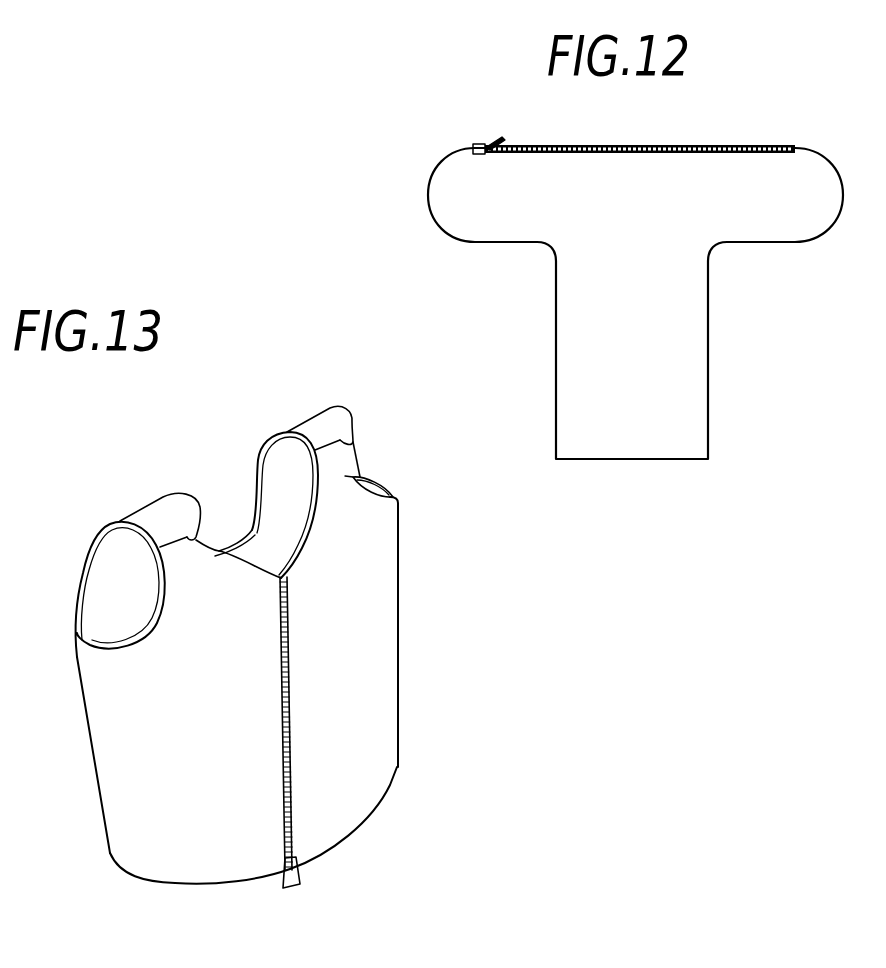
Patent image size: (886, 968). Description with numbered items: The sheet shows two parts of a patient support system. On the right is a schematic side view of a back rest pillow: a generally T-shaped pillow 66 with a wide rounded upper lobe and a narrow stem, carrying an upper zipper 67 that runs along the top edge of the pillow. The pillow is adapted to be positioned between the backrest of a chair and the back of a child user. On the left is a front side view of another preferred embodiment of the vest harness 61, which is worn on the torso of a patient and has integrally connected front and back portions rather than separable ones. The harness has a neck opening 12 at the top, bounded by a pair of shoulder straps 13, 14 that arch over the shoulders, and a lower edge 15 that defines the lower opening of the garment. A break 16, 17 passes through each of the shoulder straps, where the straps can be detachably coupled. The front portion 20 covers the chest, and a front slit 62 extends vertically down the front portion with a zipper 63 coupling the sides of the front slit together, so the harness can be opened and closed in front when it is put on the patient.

In FIG. 13, the neck opening 12 is at (265, 487).
In FIG. 13, the shoulder strap 13 is at (100, 530).
In FIG. 13, the shoulder strap 14 is at (353, 477).
In FIG. 13, the lower edge 15 is at (323, 857).
In FIG. 13, the break 16 is at (195, 527).
In FIG. 13, the break 17 is at (353, 473).
In FIG. 13, the front portion 20 is at (365, 665).
In FIG. 13, the vest harness 61 is at (455, 593).
In FIG. 13, the front slit 62 is at (293, 807).
In FIG. 13, the zipper 63 is at (290, 888).
In FIG. 12, the T-shaped pillow 66 is at (722, 258).
In FIG. 12, the upper zipper 67 is at (748, 146).